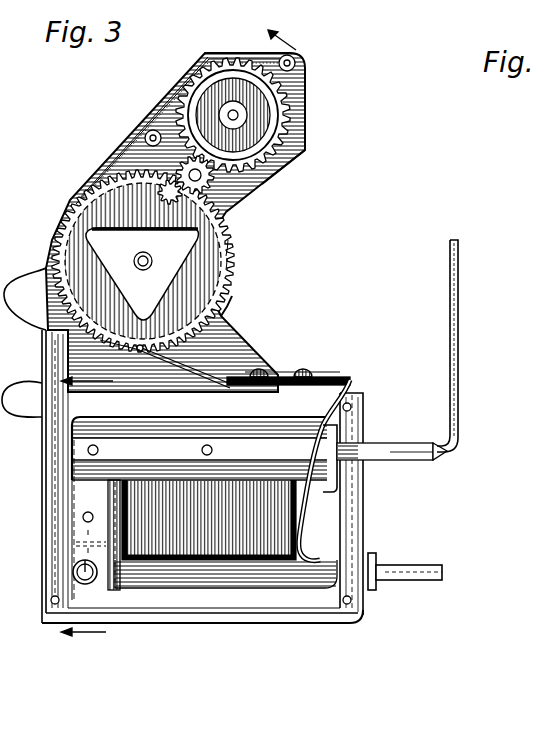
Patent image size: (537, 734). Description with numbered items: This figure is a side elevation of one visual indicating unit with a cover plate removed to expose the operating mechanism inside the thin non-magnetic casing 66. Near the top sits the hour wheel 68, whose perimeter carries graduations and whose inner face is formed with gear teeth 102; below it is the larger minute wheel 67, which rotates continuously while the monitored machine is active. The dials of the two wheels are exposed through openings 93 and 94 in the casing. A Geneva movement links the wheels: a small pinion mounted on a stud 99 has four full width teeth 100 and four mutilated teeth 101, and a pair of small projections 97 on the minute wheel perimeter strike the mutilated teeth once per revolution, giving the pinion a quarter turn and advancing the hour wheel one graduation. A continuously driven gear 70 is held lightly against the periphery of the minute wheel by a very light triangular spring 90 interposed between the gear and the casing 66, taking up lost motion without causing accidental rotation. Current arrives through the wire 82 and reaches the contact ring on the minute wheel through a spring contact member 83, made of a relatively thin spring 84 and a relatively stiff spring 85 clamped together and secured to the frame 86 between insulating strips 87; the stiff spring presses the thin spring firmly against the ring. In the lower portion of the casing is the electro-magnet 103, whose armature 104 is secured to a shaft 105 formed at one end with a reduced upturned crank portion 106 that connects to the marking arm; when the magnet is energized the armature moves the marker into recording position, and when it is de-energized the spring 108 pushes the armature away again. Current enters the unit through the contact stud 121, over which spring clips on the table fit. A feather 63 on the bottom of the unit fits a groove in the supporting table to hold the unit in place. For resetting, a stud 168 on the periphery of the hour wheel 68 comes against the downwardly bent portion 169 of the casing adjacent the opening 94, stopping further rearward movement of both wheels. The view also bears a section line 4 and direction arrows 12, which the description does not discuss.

The section line 4- 4 is at (282, 36).
The direction arrow 12 is at (87, 511).
The feather 63 is at (137, 630).
The casing 66 is at (42, 528).
The minute wheel 67 is at (240, 262).
The hour wheel 68 is at (304, 99).
The continuously driven gear 70 is at (240, 248).
The wire 82 is at (353, 380).
The spring contact member 83 is at (186, 360).
The thin spring member 84 is at (236, 306).
The stiff spring 85 is at (141, 352).
The frame 86 is at (283, 370).
The insulating strips 87 is at (262, 368).
The triangular spring 90 is at (90, 238).
The opening 93 is at (115, 158).
The opening 94 is at (186, 72).
The small projections 97 is at (142, 260).
The stud 99 is at (266, 177).
The full width teeth 100 is at (214, 195).
The mutilated teeth 101 is at (143, 261).
The gear teeth 102 is at (303, 124).
The electro-magnet 103 is at (203, 560).
The armature 104 is at (340, 458).
The shaft 105 is at (217, 453).
The upturned crank portion 106 is at (460, 280).
The spring 108 is at (78, 582).
The contact stud 121 is at (406, 578).
The stud 168 is at (190, 84).
The downwardly bent portion 169 is at (196, 70).